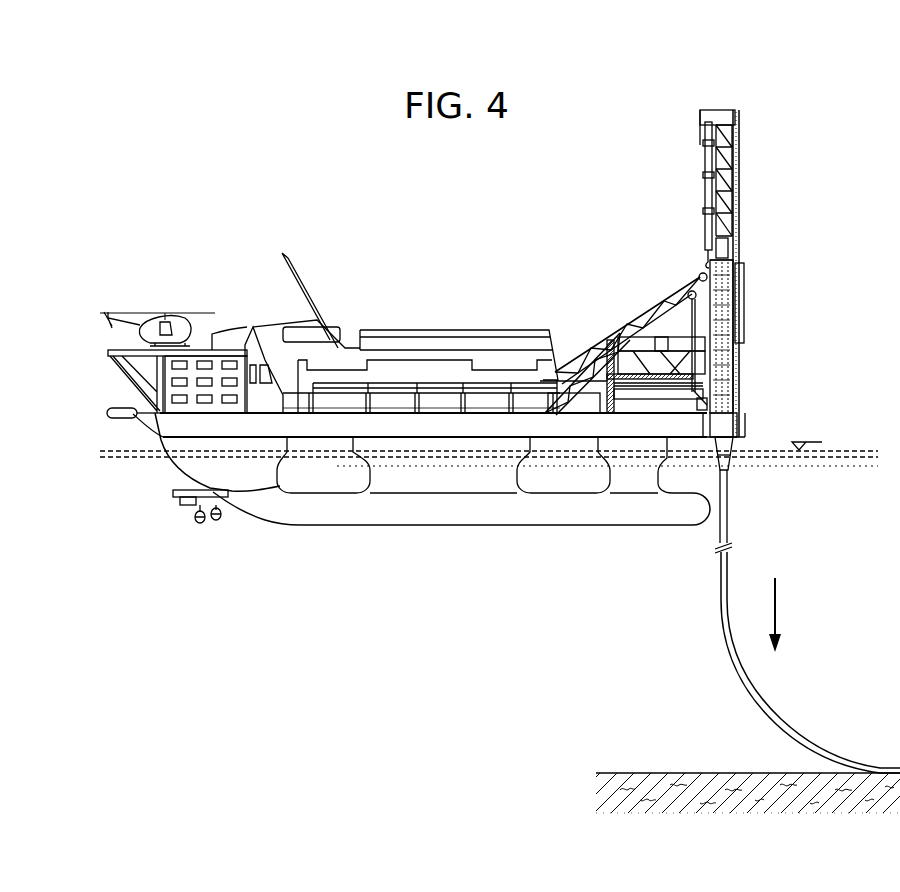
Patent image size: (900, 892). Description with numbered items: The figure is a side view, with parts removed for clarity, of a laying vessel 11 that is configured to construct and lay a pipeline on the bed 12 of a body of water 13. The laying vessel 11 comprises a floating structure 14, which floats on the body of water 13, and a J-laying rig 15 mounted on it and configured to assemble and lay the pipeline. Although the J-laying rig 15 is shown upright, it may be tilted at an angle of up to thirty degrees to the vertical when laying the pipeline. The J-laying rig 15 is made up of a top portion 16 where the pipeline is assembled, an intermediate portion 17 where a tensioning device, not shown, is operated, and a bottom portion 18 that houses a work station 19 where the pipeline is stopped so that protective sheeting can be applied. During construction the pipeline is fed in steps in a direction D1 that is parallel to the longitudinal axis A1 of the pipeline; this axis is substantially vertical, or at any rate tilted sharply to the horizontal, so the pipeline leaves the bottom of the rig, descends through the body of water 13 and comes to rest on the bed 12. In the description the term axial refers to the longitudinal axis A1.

The laying vessel 11 is at (377, 280).
The bed 12 is at (710, 793).
The body of water 13 is at (822, 480).
The floating structure 14 is at (440, 422).
The J-laying rig 15 is at (655, 206).
The top portion 16 is at (745, 154).
The intermediate portion 17 is at (750, 308).
The bottom portion 18 is at (747, 419).
The work station 19 is at (742, 388).
The longitudinal axis A1 is at (725, 513).
The direction D1 is at (777, 606).